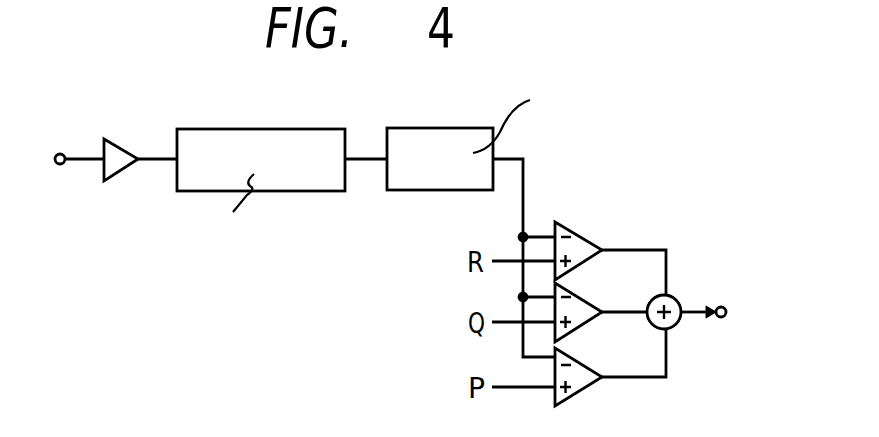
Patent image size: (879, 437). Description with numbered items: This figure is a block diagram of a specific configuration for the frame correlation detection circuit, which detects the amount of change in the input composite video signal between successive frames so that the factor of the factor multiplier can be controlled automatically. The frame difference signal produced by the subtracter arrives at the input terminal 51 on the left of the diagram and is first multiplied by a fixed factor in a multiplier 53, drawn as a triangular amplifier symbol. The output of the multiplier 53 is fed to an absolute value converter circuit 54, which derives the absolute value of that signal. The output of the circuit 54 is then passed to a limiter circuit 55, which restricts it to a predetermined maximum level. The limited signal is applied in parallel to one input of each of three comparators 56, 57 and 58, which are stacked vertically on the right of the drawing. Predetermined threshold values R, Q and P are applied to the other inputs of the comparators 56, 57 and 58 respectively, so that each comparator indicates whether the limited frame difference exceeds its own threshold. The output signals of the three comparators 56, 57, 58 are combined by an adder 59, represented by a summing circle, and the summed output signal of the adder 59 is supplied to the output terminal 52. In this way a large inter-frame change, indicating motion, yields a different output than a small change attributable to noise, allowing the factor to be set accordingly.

The input terminal 51 is at (61, 151).
The terminal 52 is at (728, 306).
The multiplier 53 is at (121, 146).
The absolute value converter circuit 54 is at (304, 128).
The limiter circuit 55 is at (470, 128).
The comparator 56 is at (593, 245).
The comparator 57 is at (595, 310).
The comparator 58 is at (595, 374).
The adder 59 is at (676, 296).